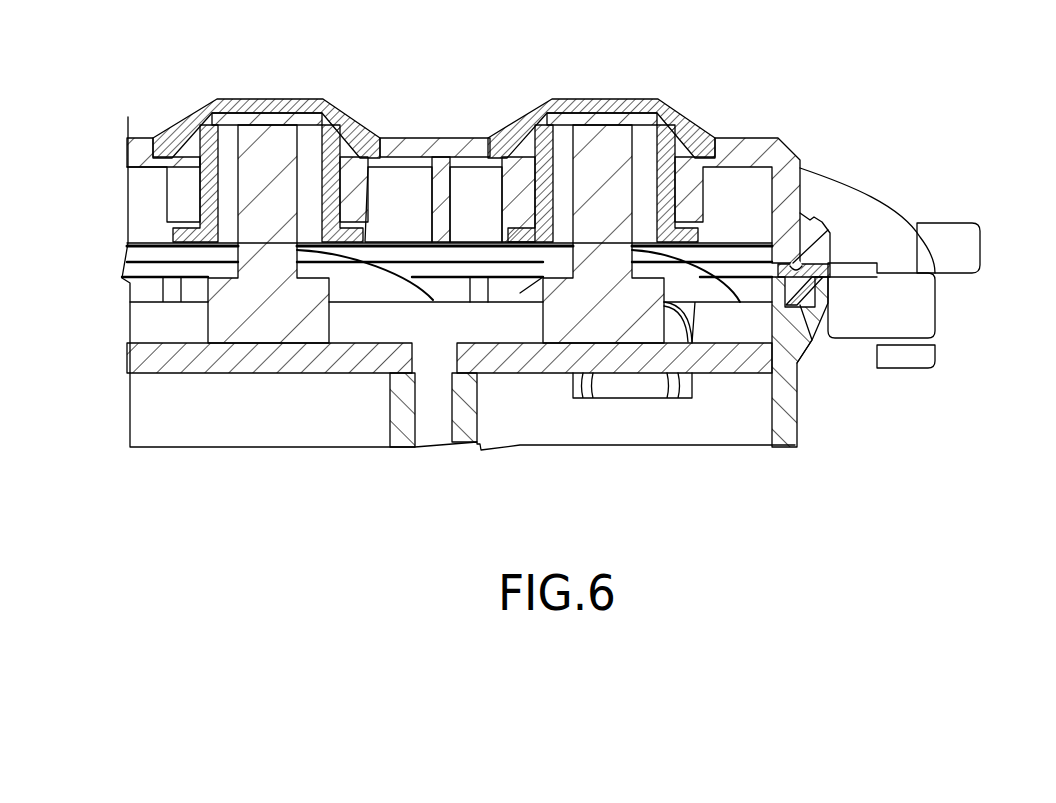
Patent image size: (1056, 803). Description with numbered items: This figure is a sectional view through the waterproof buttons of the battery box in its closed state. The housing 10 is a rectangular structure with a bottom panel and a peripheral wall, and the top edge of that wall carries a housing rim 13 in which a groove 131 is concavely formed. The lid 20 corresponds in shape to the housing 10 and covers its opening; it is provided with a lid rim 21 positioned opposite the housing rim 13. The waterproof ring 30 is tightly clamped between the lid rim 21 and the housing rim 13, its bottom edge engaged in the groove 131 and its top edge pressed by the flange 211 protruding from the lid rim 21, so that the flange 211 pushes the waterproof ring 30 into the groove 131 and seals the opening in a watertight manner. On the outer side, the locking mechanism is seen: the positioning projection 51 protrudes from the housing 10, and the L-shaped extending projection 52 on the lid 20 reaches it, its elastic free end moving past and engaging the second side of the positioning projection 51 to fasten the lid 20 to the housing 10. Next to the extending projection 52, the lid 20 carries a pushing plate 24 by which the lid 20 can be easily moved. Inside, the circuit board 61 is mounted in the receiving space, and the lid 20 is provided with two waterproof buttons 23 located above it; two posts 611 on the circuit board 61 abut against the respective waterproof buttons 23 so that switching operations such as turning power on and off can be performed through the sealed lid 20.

The housing 10 is at (778, 421).
The housing rim 13 is at (808, 347).
The groove 131 is at (815, 300).
The lid 20 is at (758, 157).
The lid rim 21 is at (801, 240).
The flange 211 is at (803, 262).
The waterproof button 23 is at (238, 103).
The pushing plate 24 is at (955, 238).
The waterproof ring 30 is at (805, 287).
The positioning projection 51 is at (917, 318).
The extending projection 52 is at (915, 355).
The circuit board 61 is at (243, 363).
The post 611 is at (276, 143).